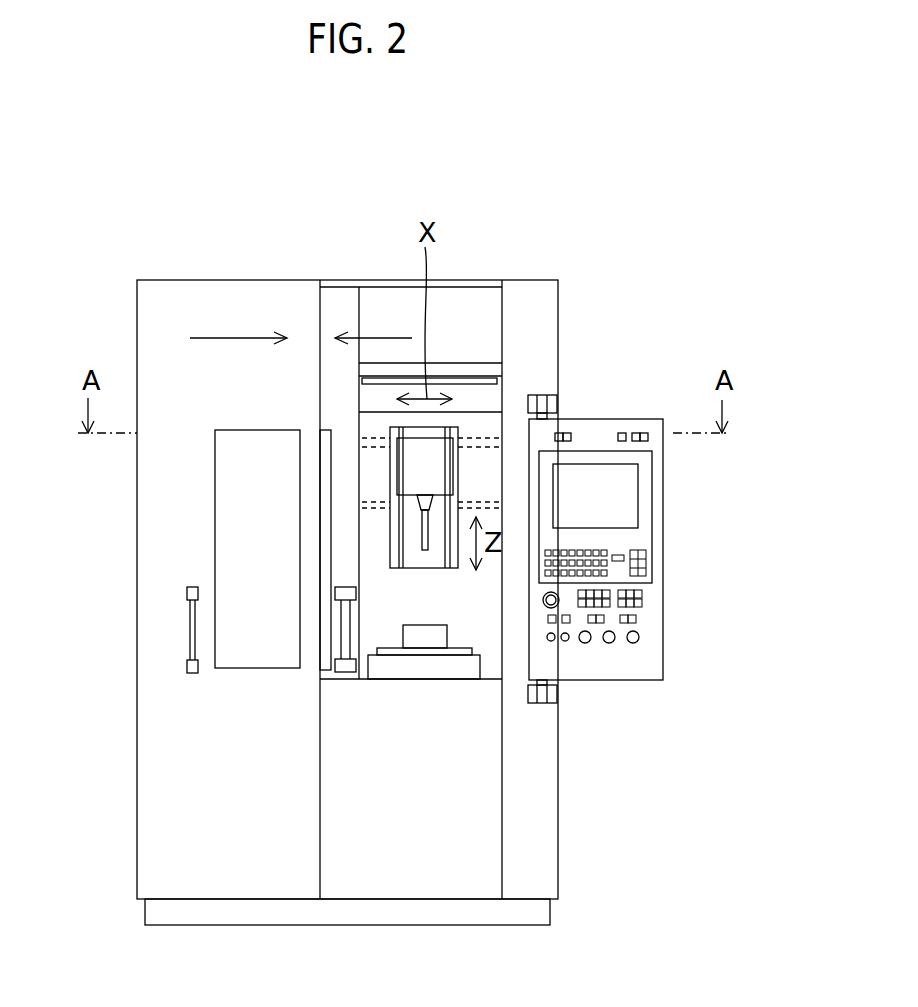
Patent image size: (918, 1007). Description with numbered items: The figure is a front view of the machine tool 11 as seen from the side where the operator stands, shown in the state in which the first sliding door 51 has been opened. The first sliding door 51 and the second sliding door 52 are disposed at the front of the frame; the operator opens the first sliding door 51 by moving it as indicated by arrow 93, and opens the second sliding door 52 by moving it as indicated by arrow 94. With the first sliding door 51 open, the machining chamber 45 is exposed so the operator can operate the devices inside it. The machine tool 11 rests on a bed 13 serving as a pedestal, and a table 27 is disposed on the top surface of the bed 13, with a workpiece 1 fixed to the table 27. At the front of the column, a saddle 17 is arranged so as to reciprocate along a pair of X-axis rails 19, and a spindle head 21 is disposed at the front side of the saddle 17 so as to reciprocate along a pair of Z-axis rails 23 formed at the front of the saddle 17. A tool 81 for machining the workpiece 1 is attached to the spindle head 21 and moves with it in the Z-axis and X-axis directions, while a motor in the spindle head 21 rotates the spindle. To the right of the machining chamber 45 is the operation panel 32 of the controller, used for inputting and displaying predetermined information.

The machine tool 11 is at (548, 213).
The second sliding door 52 is at (183, 315).
The arrow 94 is at (246, 338).
The first sliding door 51 is at (343, 308).
The arrow 93 is at (384, 338).
The saddle 17 is at (460, 430).
The Z-axis rails 23 is at (407, 555).
The spindle head 21 is at (415, 477).
The X-axis rails 19 is at (480, 447).
The tool 81 is at (418, 541).
The machining chamber 45 is at (378, 608).
The workpiece 1 is at (420, 637).
The table 27 is at (388, 667).
The bed 13 is at (445, 865).
The operation panel 32 is at (640, 540).